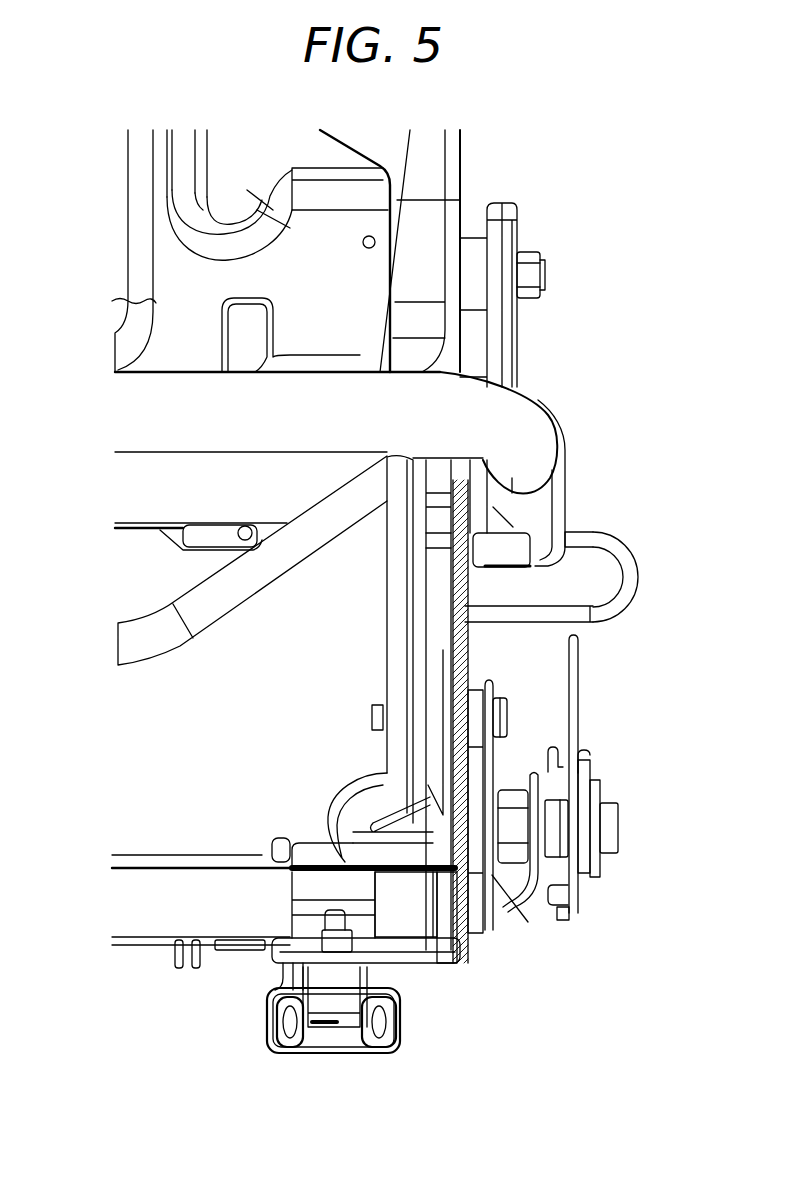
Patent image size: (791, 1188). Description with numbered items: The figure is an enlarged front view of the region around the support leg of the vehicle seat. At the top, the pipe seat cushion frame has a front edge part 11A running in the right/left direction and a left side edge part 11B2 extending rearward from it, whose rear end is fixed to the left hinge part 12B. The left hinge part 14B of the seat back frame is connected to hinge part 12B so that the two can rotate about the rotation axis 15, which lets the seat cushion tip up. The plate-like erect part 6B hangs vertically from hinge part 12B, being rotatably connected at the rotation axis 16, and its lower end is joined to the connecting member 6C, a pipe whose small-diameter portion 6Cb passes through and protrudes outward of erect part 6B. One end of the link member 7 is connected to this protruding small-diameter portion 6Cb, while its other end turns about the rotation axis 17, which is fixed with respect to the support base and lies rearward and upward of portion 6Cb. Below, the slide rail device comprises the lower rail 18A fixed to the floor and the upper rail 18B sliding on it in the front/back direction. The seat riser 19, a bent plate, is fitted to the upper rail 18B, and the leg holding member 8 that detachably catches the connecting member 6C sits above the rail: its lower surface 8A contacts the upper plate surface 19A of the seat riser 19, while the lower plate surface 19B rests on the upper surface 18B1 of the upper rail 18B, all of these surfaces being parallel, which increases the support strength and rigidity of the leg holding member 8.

The left hinge part 14B is at (462, 163).
The rotation axis 15 is at (548, 270).
The left hinge part 12B is at (518, 350).
The left side edge part 11B2 is at (565, 443).
The front edge part 11A is at (173, 452).
The rotation axis 16 is at (388, 566).
The erect part 6B is at (467, 663).
The rotation axis 17 is at (505, 716).
The link member 7 is at (497, 755).
The plate surface 19A is at (345, 842).
The upper surface 18B1 is at (305, 895).
The leg holding member 8 is at (292, 893).
The connecting member 6C is at (145, 923).
The lower surface 8A is at (283, 982).
The small-diameter portion 6Cb is at (503, 897).
The seat riser 19 is at (393, 967).
The lower rail 18A is at (400, 1023).
The upper rail 18B is at (323, 1000).
The plate surface 19B is at (352, 1030).